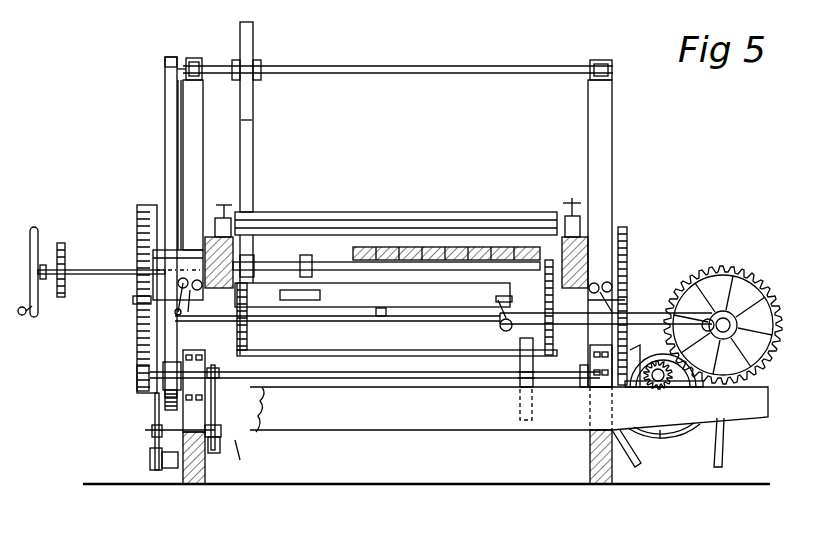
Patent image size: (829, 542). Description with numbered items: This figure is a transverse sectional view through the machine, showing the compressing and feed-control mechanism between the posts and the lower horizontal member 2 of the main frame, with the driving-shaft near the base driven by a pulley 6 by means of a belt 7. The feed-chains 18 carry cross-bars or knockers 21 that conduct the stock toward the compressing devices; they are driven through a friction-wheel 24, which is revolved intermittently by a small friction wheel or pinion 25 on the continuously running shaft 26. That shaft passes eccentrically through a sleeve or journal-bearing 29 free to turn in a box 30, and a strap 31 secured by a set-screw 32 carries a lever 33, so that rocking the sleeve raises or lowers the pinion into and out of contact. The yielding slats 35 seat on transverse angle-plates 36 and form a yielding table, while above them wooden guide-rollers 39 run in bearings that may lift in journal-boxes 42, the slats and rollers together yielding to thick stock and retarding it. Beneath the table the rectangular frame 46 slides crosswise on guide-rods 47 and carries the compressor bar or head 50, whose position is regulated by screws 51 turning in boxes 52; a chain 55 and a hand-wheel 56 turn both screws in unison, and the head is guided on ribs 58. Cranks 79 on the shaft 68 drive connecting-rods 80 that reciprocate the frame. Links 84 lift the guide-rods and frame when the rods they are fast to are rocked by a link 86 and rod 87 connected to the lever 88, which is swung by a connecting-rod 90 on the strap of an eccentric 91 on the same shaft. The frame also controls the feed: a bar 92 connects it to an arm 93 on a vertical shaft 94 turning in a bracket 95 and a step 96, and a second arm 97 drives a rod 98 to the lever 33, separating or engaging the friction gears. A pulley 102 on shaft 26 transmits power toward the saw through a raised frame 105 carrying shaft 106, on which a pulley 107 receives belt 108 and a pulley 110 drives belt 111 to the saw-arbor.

The lower horizontal member 2 is at (585, 440).
The pulley 6 is at (664, 440).
The belt 7 is at (630, 468).
The feed-chains 18 is at (250, 341).
The cross-bars or knockers 21 is at (410, 372).
The friction-wheel 24 is at (137, 212).
The small friction wheel or pinion 25 is at (163, 372).
The shaft 26 is at (137, 378).
The sleeve or journal-bearing 29 is at (165, 392).
The box 30 is at (158, 405).
The strap 31 is at (216, 382).
The set-screw 32 is at (270, 390).
The lever 33 is at (240, 440).
The yielding slats 35 is at (395, 212).
The transverse angle-plates 36 is at (600, 240).
The guide-rollers 39 is at (440, 247).
The journal-boxes 42 is at (596, 212).
The rectangular frame 46 is at (517, 296).
The guide-rods 47 is at (612, 268).
The compressor bar or head 50 is at (304, 255).
The screws 51 is at (90, 268).
The boxes 52 is at (258, 235).
The chain 55 is at (61, 243).
The hand-wheel 56 is at (34, 226).
The ribs 58 is at (495, 262).
The shaft 68 is at (762, 300).
The cranks 79 is at (770, 350).
The connecting-rods 80 is at (676, 312).
The links 84 is at (628, 250).
The link 86 is at (150, 322).
The rod 87 is at (162, 332).
The lever 88 is at (381, 316).
The connecting-rod 90 is at (703, 262).
The eccentric 91 is at (732, 298).
The bar 92 is at (160, 306).
The arm 93 is at (133, 300).
The vertical shaft 94 is at (150, 432).
The bracket 95 is at (186, 245).
The step 96 is at (148, 456).
The second arm 97 is at (168, 468).
The rod 98 is at (222, 452).
The pulley 102 is at (527, 420).
The raised frame 105 is at (614, 94).
The shaft 106 is at (408, 65).
The pulley 107 is at (164, 72).
The belt 108 is at (165, 125).
The pulley 110 is at (254, 33).
The belt 111 is at (255, 130).